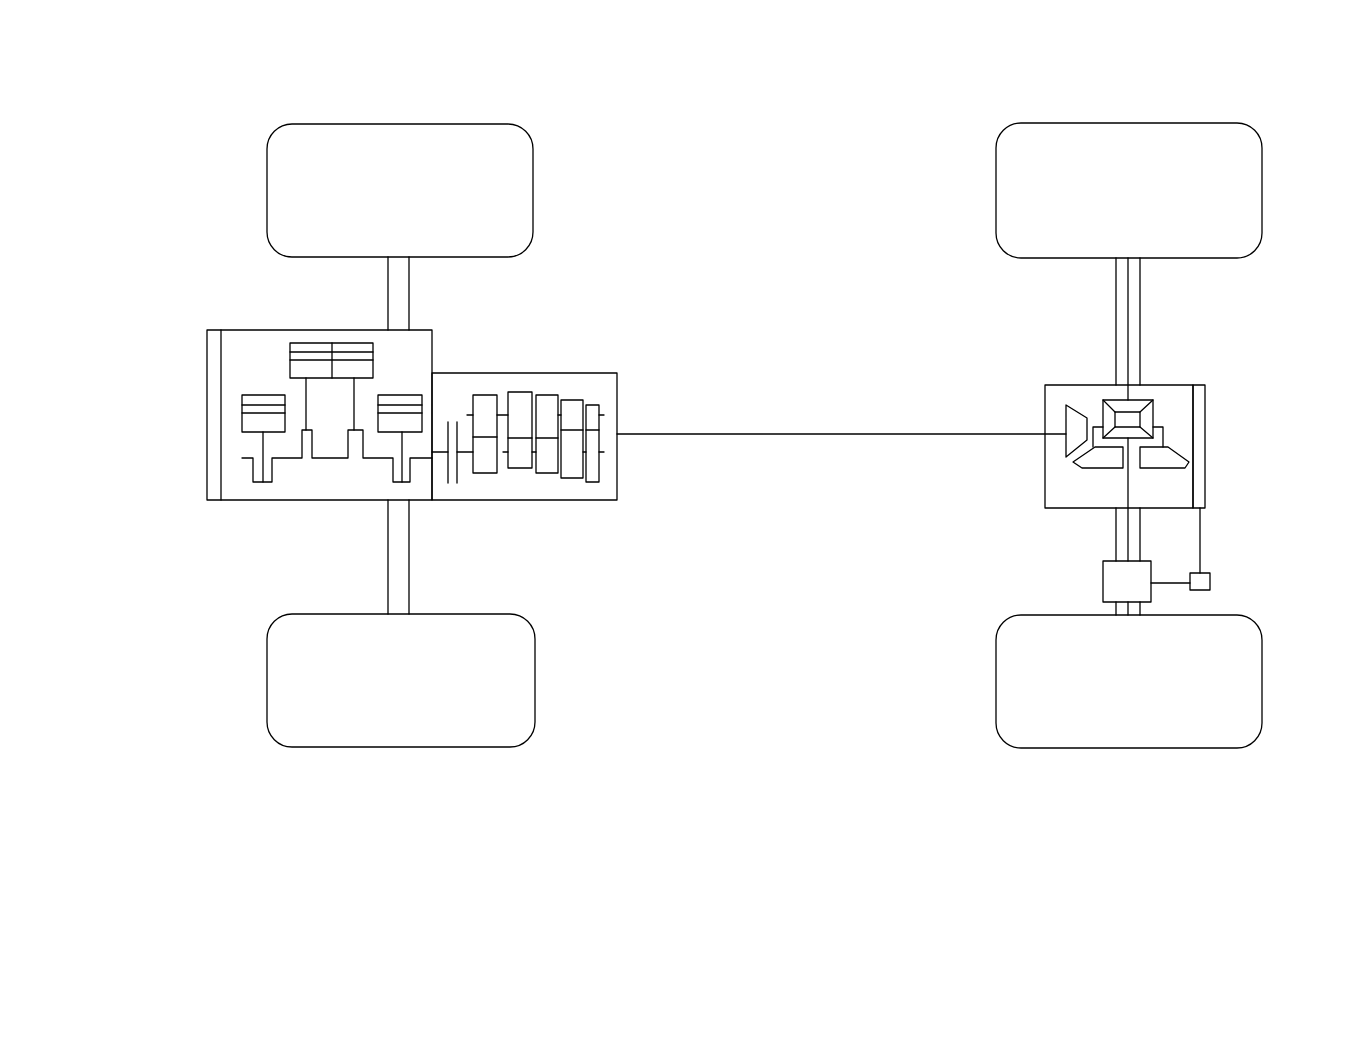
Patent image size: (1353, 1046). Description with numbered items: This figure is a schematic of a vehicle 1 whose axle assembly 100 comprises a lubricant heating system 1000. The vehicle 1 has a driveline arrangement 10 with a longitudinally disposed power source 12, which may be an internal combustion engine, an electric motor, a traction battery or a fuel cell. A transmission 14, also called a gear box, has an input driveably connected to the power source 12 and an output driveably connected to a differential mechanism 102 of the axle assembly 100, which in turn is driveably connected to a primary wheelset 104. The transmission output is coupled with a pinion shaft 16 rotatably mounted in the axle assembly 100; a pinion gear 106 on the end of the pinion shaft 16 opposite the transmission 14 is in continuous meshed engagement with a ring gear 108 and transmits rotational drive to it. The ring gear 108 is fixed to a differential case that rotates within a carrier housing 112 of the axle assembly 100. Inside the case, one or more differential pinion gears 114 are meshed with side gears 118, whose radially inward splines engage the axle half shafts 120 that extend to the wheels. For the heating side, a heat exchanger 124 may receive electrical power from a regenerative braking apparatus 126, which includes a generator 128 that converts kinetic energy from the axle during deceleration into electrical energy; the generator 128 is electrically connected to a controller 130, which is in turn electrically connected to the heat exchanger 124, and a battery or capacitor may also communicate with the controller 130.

The vehicle 1 is at (683, 785).
The driveline arrangement 10 is at (736, 350).
The power source 12 is at (238, 492).
The transmission 14 is at (520, 382).
The pinion shaft 16 is at (927, 434).
The axle assembly 100 is at (955, 375).
The differential mechanism 102 is at (1052, 476).
The primary wheelset 104 is at (1038, 138).
The pinion gear 106 is at (1070, 426).
The ring gear 108 is at (1092, 466).
The carrier housing 112 is at (1195, 483).
The differential pinion gears 114 is at (1108, 407).
The side gears 118 is at (1150, 388).
The axle half shafts 120 is at (1128, 345).
The heat exchanger 124 is at (1203, 398).
The regenerative braking apparatus 126 is at (1274, 635).
The generator 128 is at (1103, 585).
The controller 130 is at (1210, 580).
The lubricant heating system 1000 is at (1254, 414).